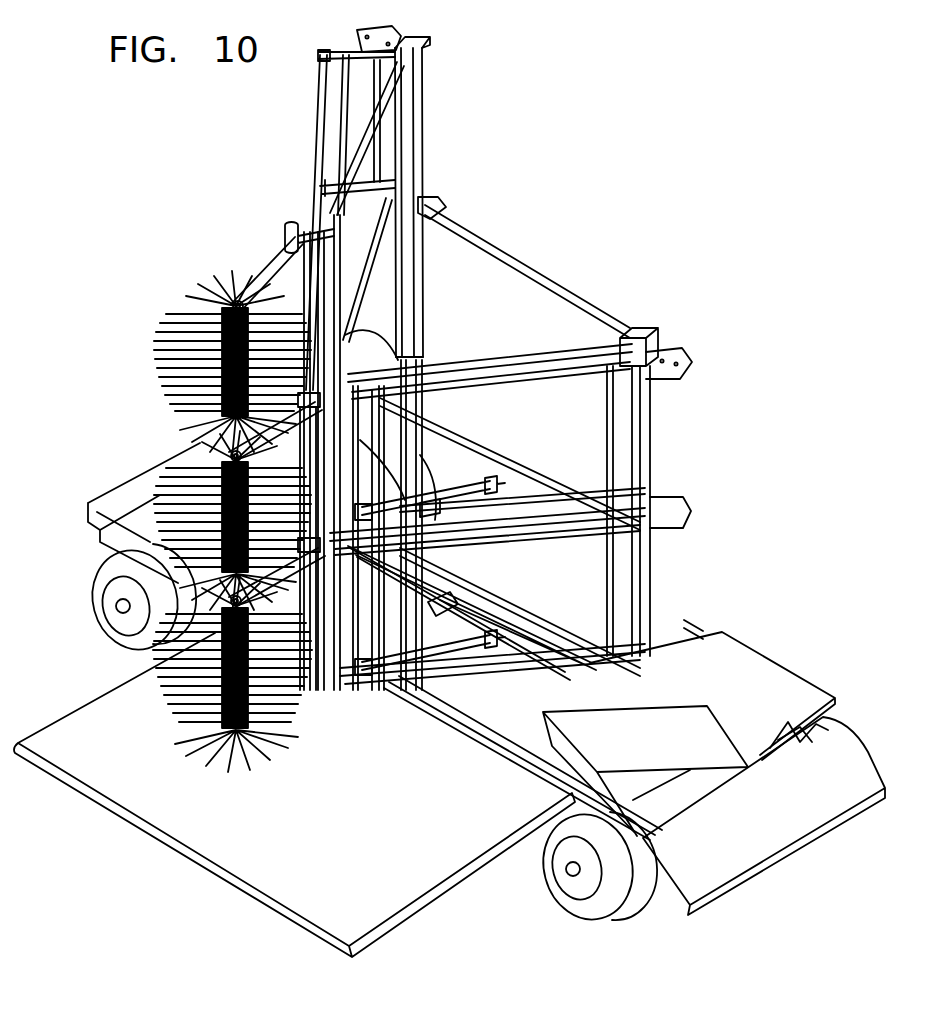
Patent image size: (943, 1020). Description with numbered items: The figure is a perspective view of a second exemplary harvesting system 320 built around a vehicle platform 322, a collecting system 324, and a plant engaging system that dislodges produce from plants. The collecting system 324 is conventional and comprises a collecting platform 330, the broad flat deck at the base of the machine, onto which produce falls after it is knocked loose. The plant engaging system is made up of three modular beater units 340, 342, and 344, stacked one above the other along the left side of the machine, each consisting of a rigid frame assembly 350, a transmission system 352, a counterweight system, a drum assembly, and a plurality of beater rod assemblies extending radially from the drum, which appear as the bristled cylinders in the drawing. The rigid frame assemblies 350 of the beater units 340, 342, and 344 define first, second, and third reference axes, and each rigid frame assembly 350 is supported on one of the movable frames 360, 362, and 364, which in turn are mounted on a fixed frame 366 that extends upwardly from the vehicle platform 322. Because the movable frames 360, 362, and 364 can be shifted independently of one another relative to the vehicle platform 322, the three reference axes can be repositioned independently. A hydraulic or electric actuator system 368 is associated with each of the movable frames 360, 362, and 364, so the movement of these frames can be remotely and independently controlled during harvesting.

The harvesting system 320 is at (562, 197).
The vehicle platform 322 is at (709, 514).
The collecting system 324 is at (167, 518).
The collecting platform 330 is at (233, 852).
The beater unit 340 is at (143, 322).
The beater unit 342 is at (136, 442).
The beater unit 344 is at (143, 727).
The rigid frame assembly 350 is at (280, 229).
The transmission system 352 is at (252, 261).
The movable frame 360 is at (293, 213).
The movable frame 362 is at (537, 341).
The movable frame 364 is at (489, 693).
The fixed frame 366 is at (448, 183).
The actuator system 368 is at (472, 472).